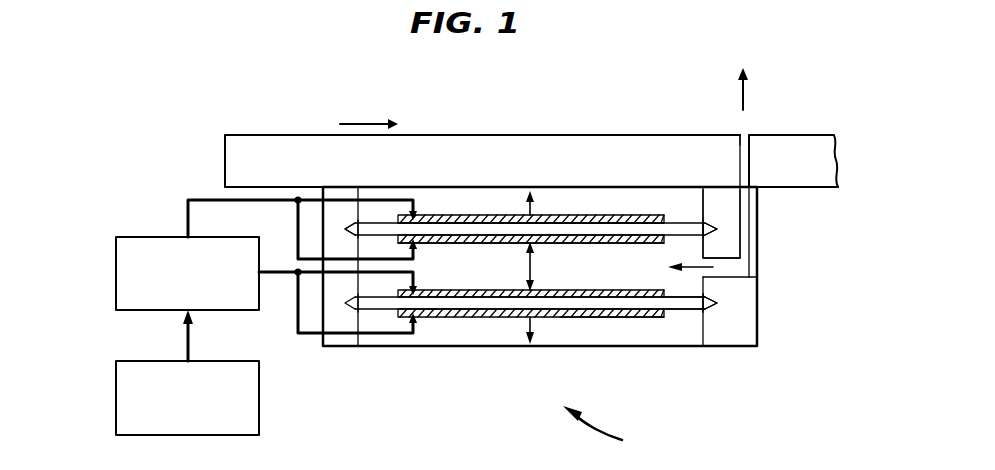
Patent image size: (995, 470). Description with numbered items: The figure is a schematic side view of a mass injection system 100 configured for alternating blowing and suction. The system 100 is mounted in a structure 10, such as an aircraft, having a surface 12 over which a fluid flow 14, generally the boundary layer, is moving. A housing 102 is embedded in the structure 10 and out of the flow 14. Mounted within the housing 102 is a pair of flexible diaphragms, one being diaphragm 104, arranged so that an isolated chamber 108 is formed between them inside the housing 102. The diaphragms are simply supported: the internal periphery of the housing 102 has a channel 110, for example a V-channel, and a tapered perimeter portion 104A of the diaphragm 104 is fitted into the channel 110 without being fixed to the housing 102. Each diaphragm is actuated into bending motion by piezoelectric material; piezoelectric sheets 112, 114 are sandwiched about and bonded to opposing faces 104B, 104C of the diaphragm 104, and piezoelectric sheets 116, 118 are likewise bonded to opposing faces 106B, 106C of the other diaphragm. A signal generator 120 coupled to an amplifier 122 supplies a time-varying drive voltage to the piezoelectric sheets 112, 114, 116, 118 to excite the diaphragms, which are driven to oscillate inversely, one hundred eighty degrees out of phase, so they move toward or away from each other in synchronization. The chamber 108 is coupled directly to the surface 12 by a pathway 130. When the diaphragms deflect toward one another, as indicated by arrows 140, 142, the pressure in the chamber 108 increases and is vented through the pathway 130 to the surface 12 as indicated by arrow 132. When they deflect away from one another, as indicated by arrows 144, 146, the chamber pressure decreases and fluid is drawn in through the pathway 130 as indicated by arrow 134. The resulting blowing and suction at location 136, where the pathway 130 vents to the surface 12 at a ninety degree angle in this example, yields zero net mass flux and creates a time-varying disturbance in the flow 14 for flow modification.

The structure 10 is at (245, 156).
The surface 12 is at (425, 135).
The fluid flow 14 is at (358, 122).
The mass injection system 100 is at (607, 429).
The housing 102 is at (743, 323).
The diaphragm 104 is at (592, 224).
The perimeter portion 104A is at (346, 226).
The face of diaphragm 104B is at (710, 230).
The opposing face of diaphragm 104C is at (687, 243).
The face of diaphragm 106B is at (386, 290).
The opposing face of diaphragm 106C is at (688, 313).
The chamber 108 is at (623, 257).
The channel 110 is at (716, 228).
The piezoelectric sheet 112 is at (548, 215).
The piezoelectric sheet 114 is at (492, 245).
The piezoelectric sheet 116 is at (452, 290).
The piezoelectric sheet 118 is at (460, 318).
The signal generator 120 is at (116, 385).
The amplifier 122 is at (116, 277).
The pathway 130 is at (728, 264).
The arrow 132 is at (745, 97).
The arrow 134 is at (698, 268).
The location 136 is at (747, 133).
The arrow 140 is at (535, 246).
The arrow 142 is at (565, 320).
The arrow 144 is at (527, 211).
The arrow 146 is at (533, 338).